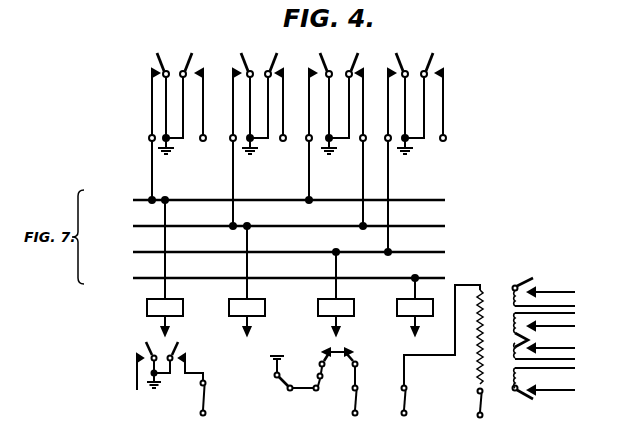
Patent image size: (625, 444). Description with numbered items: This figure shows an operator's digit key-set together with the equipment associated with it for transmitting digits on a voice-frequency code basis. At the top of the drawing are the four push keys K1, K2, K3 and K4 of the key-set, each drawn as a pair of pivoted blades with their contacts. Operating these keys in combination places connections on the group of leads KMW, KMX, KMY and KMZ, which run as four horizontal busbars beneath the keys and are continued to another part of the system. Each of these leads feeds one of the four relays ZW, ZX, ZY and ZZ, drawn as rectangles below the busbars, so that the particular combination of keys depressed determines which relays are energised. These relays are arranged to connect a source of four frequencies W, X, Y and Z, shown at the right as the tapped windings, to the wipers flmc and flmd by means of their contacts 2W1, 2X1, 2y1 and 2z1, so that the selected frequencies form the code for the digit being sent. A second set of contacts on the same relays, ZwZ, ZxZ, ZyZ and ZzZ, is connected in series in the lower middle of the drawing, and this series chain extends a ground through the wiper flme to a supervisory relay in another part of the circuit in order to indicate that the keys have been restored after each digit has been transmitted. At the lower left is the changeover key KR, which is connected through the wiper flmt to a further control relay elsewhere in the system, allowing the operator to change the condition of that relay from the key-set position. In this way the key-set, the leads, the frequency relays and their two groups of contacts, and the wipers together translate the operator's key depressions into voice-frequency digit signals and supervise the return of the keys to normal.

The push key K1 is at (177, 120).
The push key K2 is at (258, 133).
The push key K3 is at (336, 133).
The push key K4 is at (415, 146).
The lead KMW is at (268, 200).
The lead KMX is at (268, 226).
The lead KMY is at (268, 252).
The lead KMZ is at (268, 278).
The relay ZW is at (145, 267).
The relay ZX is at (233, 280).
The relay ZY is at (322, 293).
The relay ZZ is at (402, 306).
The changeover key KR is at (171, 363).
The wiper flmt is at (202, 396).
The contact ZwZ is at (266, 373).
The contact ZxZ is at (311, 391).
The contact ZyZ is at (320, 356).
The contact ZzZ is at (363, 362).
The wiper flme is at (359, 411).
The wiper flmc is at (437, 360).
The wiper flmd is at (487, 362).
The contact 2W1 is at (541, 280).
The frequency source W is at (544, 297).
The frequency source X is at (544, 322).
The contact 2X1 is at (540, 340).
The contact 2y1 is at (551, 352).
The frequency source Y is at (544, 351).
The frequency source Z is at (544, 381).
The contact 2z1 is at (538, 399).